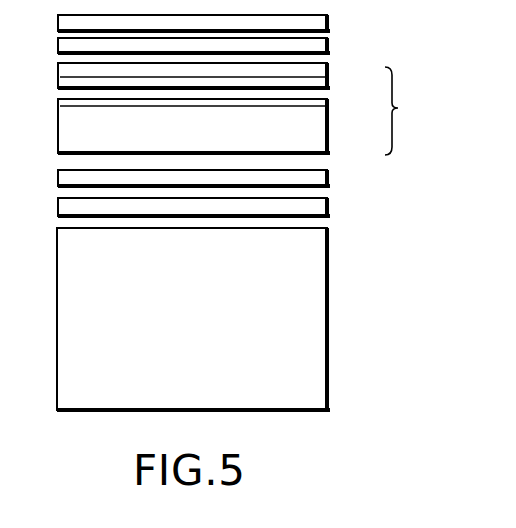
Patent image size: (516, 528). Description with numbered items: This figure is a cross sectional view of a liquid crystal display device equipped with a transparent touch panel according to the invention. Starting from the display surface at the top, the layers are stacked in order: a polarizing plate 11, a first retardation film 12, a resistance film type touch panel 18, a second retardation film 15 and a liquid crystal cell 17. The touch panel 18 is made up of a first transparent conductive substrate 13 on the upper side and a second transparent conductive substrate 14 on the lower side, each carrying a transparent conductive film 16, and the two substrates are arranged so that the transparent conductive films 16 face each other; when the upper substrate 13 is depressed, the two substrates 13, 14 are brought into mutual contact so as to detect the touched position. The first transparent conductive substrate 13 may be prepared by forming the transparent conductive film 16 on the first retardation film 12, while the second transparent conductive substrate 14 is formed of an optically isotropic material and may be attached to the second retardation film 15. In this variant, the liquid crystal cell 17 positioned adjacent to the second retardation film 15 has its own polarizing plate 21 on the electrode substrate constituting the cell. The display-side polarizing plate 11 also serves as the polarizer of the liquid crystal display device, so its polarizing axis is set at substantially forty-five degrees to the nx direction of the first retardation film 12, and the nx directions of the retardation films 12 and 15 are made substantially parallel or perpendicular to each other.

The polarizing plate 11 is at (319, 23).
The first retardation film 12 is at (319, 46).
The first transparent conductive substrate 13 is at (319, 74).
The second transparent conductive substrate 14 is at (319, 130).
The second retardation film 15 is at (319, 180).
The transparent conductive film 16 is at (62, 83).
The liquid crystal cell 17 is at (319, 302).
The touch panel 18 is at (404, 111).
The polarizing plate 21 is at (319, 208).